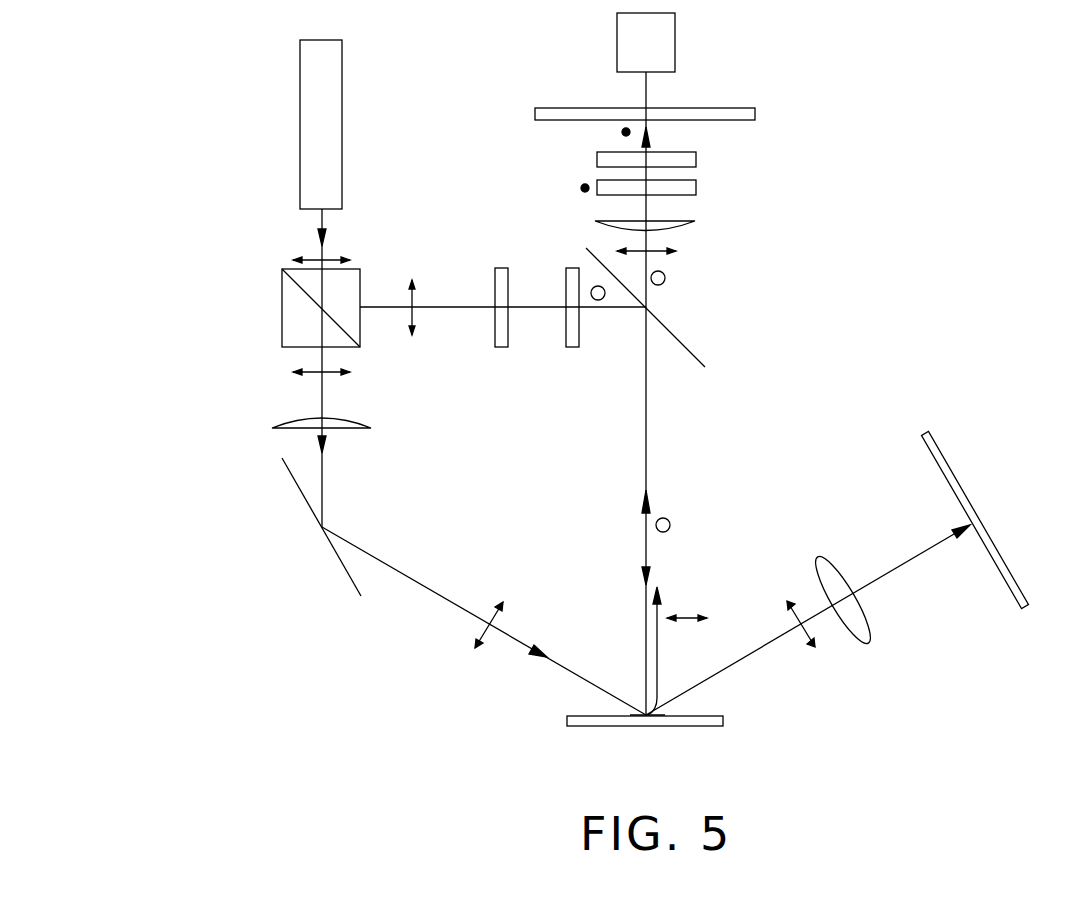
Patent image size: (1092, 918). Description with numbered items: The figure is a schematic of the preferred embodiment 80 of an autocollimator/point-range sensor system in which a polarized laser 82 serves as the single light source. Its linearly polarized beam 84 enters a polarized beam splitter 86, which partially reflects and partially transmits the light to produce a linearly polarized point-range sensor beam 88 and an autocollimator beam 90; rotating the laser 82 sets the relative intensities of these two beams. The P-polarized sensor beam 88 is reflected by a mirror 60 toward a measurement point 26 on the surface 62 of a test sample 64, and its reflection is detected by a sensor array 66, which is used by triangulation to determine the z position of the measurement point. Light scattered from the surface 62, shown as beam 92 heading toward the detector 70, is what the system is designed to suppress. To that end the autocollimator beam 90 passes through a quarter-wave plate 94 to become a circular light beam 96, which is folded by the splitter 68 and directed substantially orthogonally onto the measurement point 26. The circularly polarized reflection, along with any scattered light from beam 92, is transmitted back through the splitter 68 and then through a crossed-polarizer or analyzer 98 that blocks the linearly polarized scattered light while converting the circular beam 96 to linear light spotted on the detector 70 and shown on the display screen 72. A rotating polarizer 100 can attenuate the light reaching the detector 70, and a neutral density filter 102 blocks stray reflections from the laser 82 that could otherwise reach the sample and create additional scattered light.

The measurement point 26 is at (650, 710).
The mirror 60 is at (300, 492).
The surface 62 is at (705, 716).
The test sample 64 is at (588, 732).
The sensor array 66 is at (953, 470).
The splitter 68 is at (690, 345).
The detector 70 is at (725, 121).
The display screen 72 is at (675, 40).
The preferred embodiment 80 is at (970, 225).
The polarized laser 82 is at (342, 87).
The laser beam 84 is at (323, 219).
The polarized beam splitter 86 is at (282, 307).
The point-range sensor beam 88 is at (322, 403).
The autocollimator beam 90 is at (371, 307).
The scattered beam 92 is at (660, 608).
The quarter-wave plate 94 is at (503, 268).
The circular light beam 96 is at (605, 310).
The analyzer 98 is at (696, 192).
The rotating polarizer 100 is at (597, 160).
The neutral density filter 102 is at (572, 348).